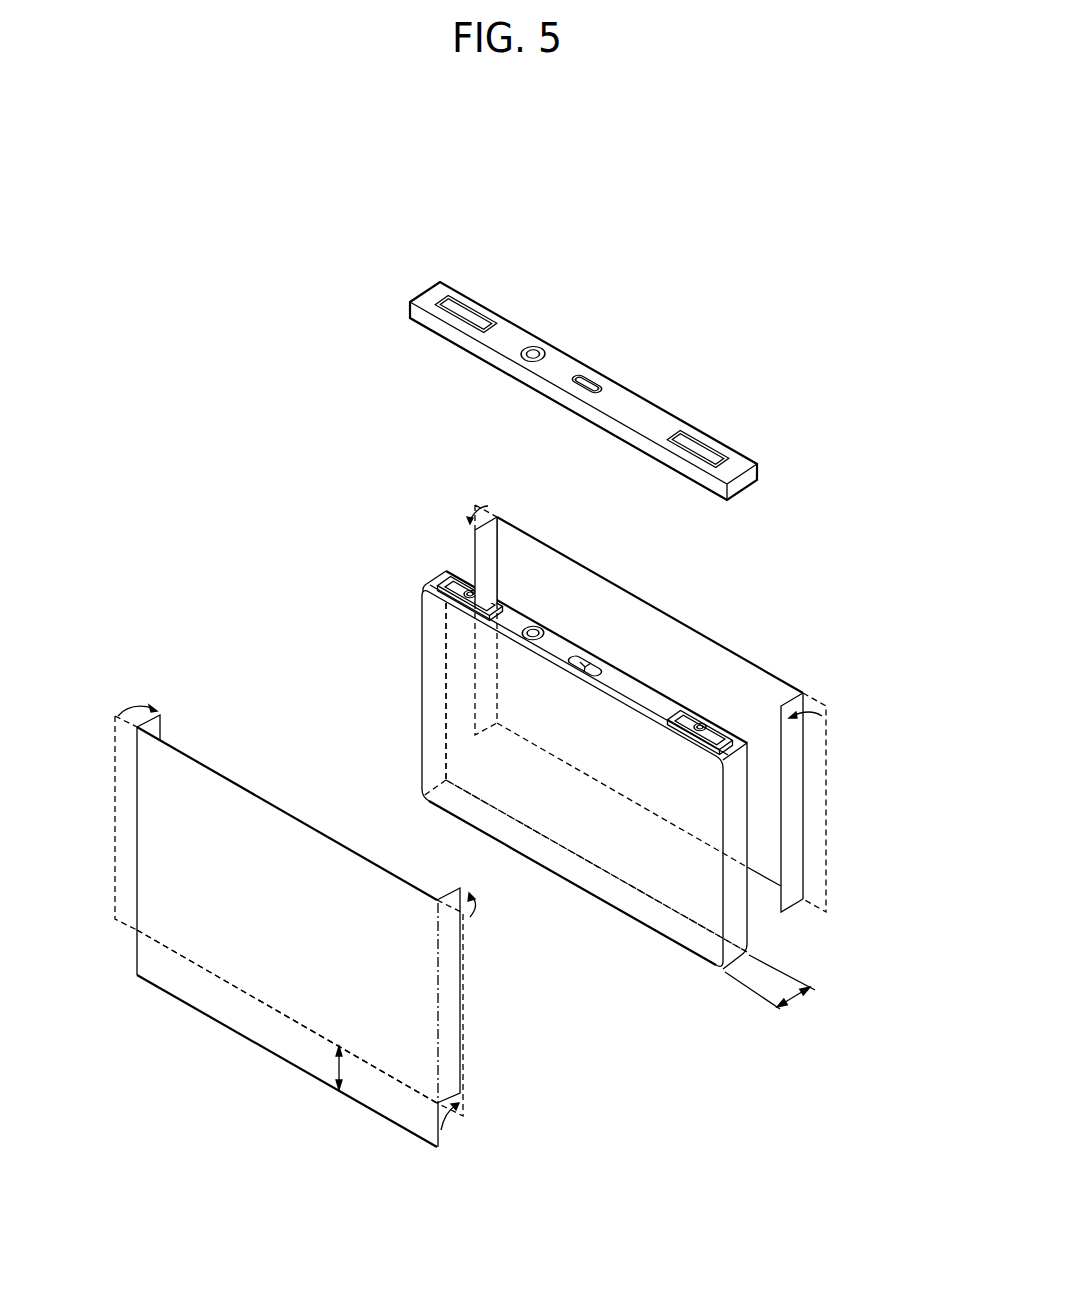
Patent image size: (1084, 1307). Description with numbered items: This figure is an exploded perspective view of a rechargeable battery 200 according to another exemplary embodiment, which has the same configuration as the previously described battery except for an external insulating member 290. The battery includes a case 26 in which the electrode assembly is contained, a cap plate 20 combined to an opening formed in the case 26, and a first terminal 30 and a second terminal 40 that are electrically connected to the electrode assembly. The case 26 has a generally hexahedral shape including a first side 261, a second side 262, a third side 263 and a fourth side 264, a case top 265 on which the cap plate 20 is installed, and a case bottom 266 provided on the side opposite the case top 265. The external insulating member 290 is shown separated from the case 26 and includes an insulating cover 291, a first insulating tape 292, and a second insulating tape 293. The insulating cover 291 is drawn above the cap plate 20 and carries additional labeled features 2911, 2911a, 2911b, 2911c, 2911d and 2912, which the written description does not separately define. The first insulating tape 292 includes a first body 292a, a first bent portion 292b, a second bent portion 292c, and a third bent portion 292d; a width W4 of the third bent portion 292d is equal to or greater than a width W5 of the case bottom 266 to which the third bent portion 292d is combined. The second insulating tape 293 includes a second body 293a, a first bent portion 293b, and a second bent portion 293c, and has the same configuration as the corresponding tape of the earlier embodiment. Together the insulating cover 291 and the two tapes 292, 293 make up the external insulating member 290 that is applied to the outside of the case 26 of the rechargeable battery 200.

The rechargeable battery 200 is at (653, 202).
The external insulating member 290 is at (183, 391).
The insulating cover 291 is at (432, 342).
The holder body 2911 is at (424, 302).
The first opening 2911a is at (463, 318).
The vent opening 2911b is at (533, 350).
The slot opening 2911c is at (585, 384).
The second opening 2911d is at (695, 452).
The holder side wall 2912 is at (423, 320).
The second insulating tape 293 is at (462, 533).
The second body 293a is at (516, 547).
The first bent portion 293b is at (793, 755).
The second bent portion 293c is at (487, 543).
The first insulating tape 292 is at (263, 781).
The first body 292a is at (280, 997).
The first bent portion 292b is at (450, 1010).
The second bent portion 292c is at (158, 727).
The third bent portion 292d is at (192, 993).
The cap plate 20 is at (634, 680).
The case 26 is at (563, 863).
The first side 261 is at (468, 760).
The second side 262 is at (740, 932).
The third side 263 is at (620, 742).
The fourth side 264 is at (440, 693).
The case top 265 is at (557, 641).
The case bottom 266 is at (665, 922).
The first terminal 30 is at (445, 600).
The second terminal 40 is at (717, 727).
The width of the third bent portion W4 is at (337, 1070).
The width of the case bottom W5 is at (776, 992).